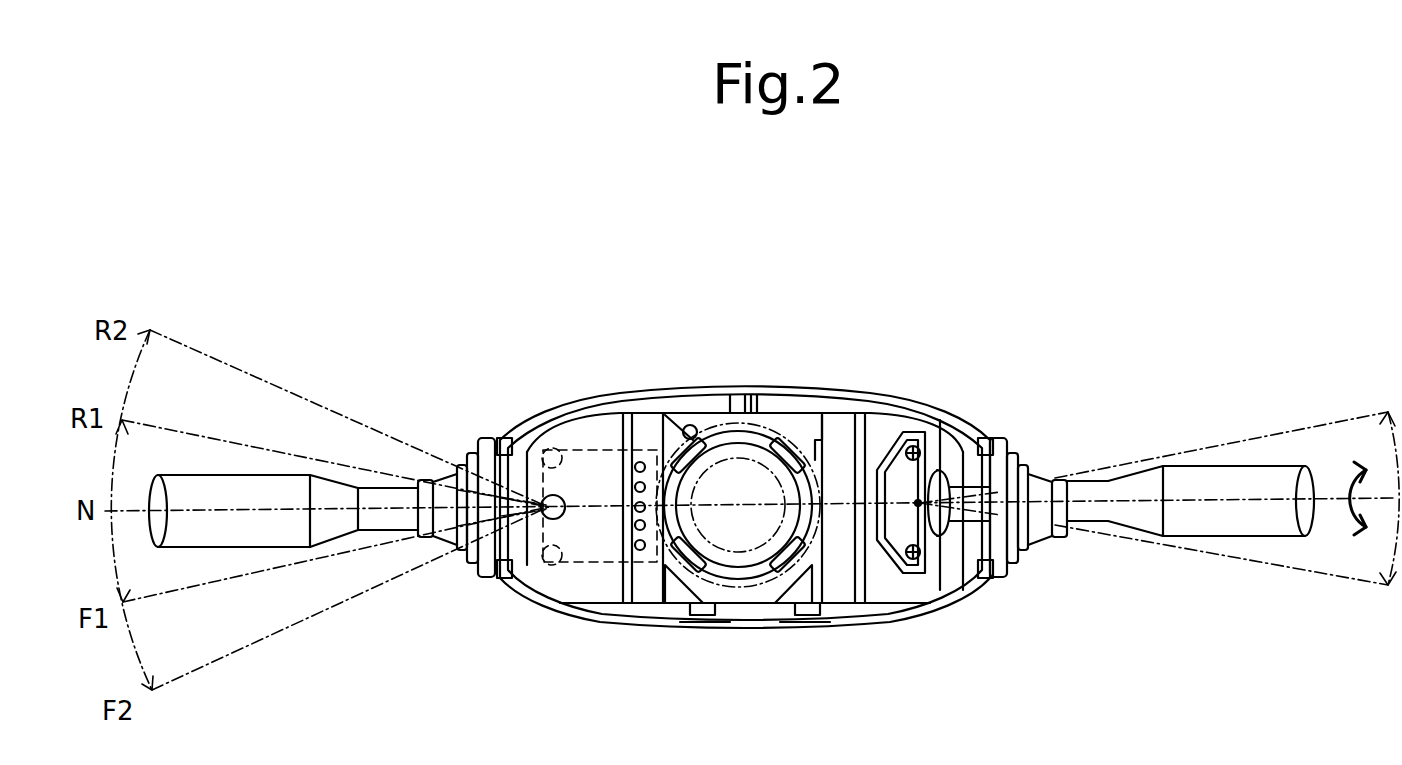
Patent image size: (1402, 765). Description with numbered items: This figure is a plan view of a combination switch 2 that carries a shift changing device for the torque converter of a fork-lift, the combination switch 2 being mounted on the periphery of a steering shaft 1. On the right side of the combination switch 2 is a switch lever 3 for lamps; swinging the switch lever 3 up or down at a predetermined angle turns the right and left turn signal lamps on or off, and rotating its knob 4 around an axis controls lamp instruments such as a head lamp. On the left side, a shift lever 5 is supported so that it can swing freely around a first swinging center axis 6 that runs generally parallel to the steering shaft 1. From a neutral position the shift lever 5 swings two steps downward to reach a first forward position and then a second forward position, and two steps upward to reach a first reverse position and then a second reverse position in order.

The steering shaft 1 is at (742, 460).
The combination switch 2 is at (626, 393).
The switch lever 3 is at (1095, 487).
The knob 4 is at (1210, 477).
The shift lever 5 is at (388, 478).
The first swinging center axis 6 is at (546, 445).